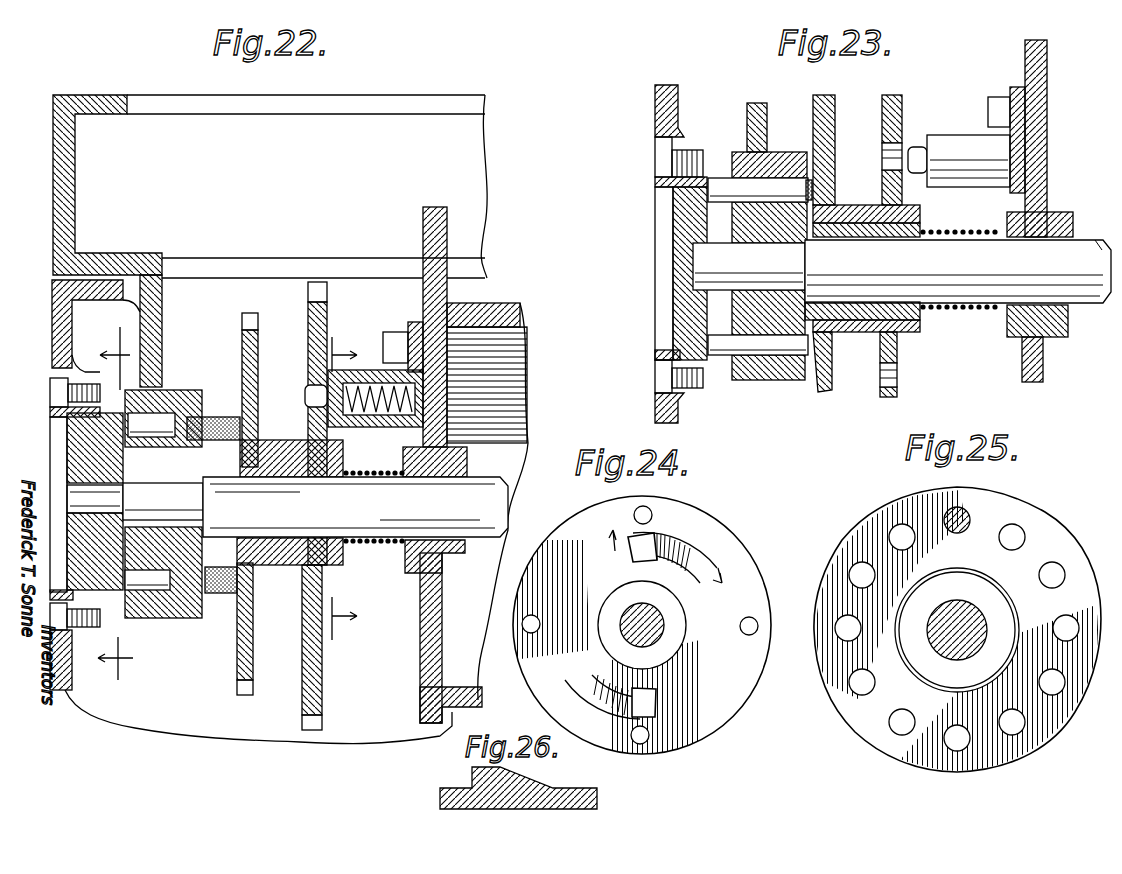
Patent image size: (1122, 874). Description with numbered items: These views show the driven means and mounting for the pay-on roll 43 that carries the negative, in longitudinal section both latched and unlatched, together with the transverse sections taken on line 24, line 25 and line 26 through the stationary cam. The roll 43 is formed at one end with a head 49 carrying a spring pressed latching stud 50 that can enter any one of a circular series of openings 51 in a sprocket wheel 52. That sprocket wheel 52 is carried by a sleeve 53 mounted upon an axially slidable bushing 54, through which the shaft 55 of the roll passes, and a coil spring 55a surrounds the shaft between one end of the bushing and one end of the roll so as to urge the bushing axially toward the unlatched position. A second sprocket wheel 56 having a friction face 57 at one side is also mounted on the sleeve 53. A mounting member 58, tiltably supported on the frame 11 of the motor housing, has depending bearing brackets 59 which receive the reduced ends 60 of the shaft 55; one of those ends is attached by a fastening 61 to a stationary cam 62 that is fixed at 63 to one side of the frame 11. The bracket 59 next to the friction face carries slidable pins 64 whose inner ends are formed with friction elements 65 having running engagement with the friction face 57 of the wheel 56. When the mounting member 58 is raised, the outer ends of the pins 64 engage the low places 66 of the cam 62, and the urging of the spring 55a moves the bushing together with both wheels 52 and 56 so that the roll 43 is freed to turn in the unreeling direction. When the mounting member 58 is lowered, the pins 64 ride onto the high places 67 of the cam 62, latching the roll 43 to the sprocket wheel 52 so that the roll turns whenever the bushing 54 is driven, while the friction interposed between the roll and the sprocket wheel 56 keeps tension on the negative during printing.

In FIG. 22, the frame 11 is at (53, 330).
In FIG. 23, the frame 11 is at (678, 92).
In FIG. 22, the section line 24— 24 is at (124, 503).
In FIG. 22, the section line 25— 25 is at (347, 489).
In FIG. 24, the section line 26— 26 is at (652, 567).
In FIG. 22, the roll 43 is at (508, 318).
In FIG. 23, the roll 43 is at (1045, 173).
In FIG. 22, the head 49 is at (423, 296).
In FIG. 22, the spring pressed latching stud 50 is at (305, 396).
In FIG. 23, the spring pressed latching stud 50 is at (940, 158).
In FIG. 25, the spring pressed latching stud 50 is at (970, 512).
In FIG. 22, the openings 51 is at (306, 378).
In FIG. 23, the openings 51 is at (882, 160).
In FIG. 25, the openings 51 is at (1002, 537).
In FIG. 22, the sprocket wheel 52 is at (302, 672).
In FIG. 23, the sprocket wheel 52 is at (902, 113).
In FIG. 25, the sprocket wheel 52 is at (1044, 524).
In FIG. 22, the sleeve 53 is at (282, 445).
In FIG. 23, the sleeve 53 is at (862, 268).
In FIG. 22, the bushing 54 is at (292, 478).
In FIG. 22, the shaft 55 is at (355, 507).
In FIG. 23, the shaft 55 is at (958, 271).
In FIG. 25, the shaft 55 is at (953, 612).
In FIG. 22, the coil spring 55a is at (370, 545).
In FIG. 23, the coil spring 55a is at (956, 310).
In FIG. 22, the sprocket wheel 56 is at (239, 677).
In FIG. 23, the sprocket wheel 56 is at (835, 115).
In FIG. 22, the friction face 57 is at (242, 352).
In FIG. 22, the mounting member 58 is at (75, 189).
In FIG. 22, the bearing brackets 59 is at (150, 330).
In FIG. 22, the reduced ends 60 is at (163, 501).
In FIG. 23, the reduced ends 60 is at (749, 266).
In FIG. 24, the reduced ends 60 is at (652, 632).
In FIG. 22, the fastening 61 is at (56, 480).
In FIG. 22, the stationary cam 62 is at (70, 533).
In FIG. 23, the stationary cam 62 is at (673, 300).
In FIG. 24, the stationary cam 62 is at (745, 556).
In FIG. 26, the stationary cam 62 is at (597, 800).
In FIG. 22, the fixing 63 is at (50, 390).
In FIG. 23, the fixing 63 is at (657, 160).
In FIG. 22, the slidable pins 64 is at (152, 412).
In FIG. 23, the slidable pins 64 is at (774, 185).
In FIG. 22, the friction elements 65 is at (215, 418).
In FIG. 23, the friction elements 65 is at (810, 190).
In FIG. 22, the low places 66 is at (163, 504).
In FIG. 23, the low places 66 is at (693, 207).
In FIG. 24, the low places 66 is at (619, 625).
In FIG. 26, the low places 66 is at (568, 790).
In FIG. 24, the high places 67 is at (634, 560).
In FIG. 26, the high places 67 is at (472, 767).